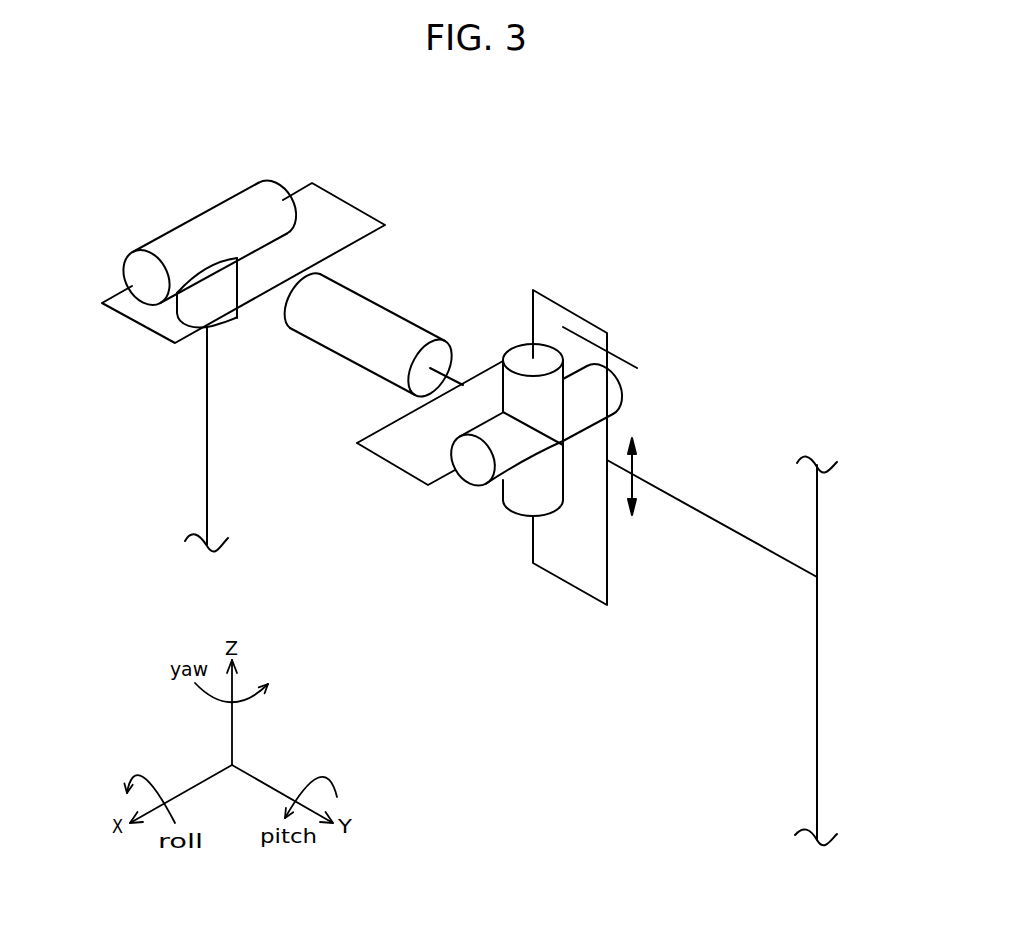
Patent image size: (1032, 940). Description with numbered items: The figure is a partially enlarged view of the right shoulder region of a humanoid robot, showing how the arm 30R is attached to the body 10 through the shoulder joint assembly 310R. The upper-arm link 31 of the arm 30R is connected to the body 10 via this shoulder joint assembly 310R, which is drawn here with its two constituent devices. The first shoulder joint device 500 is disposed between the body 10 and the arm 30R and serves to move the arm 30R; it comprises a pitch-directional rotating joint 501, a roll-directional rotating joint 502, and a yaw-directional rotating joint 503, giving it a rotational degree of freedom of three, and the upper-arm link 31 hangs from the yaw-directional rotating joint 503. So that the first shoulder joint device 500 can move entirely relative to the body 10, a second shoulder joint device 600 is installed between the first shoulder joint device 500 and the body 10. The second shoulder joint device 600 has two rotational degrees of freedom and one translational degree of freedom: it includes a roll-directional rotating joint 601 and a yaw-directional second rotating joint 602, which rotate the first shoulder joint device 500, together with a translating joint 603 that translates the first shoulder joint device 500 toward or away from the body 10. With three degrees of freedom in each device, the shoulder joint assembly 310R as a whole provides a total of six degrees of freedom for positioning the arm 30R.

The body 10 is at (817, 636).
The arm 30R is at (112, 427).
The upper-arm link 31 is at (207, 397).
The shoulder joint assembly 310R is at (553, 172).
The first shoulder joint device 500 is at (418, 229).
The pitch-directional rotating joint 501 is at (360, 349).
The roll-directional rotating joint 502 is at (172, 247).
The yaw-directional rotating joint 503 is at (235, 320).
The second shoulder joint device 600 is at (564, 276).
The roll-directional rotating joint 601 is at (472, 462).
The yaw-directional second rotating joint 602 is at (515, 357).
The translating joint 603 is at (607, 437).